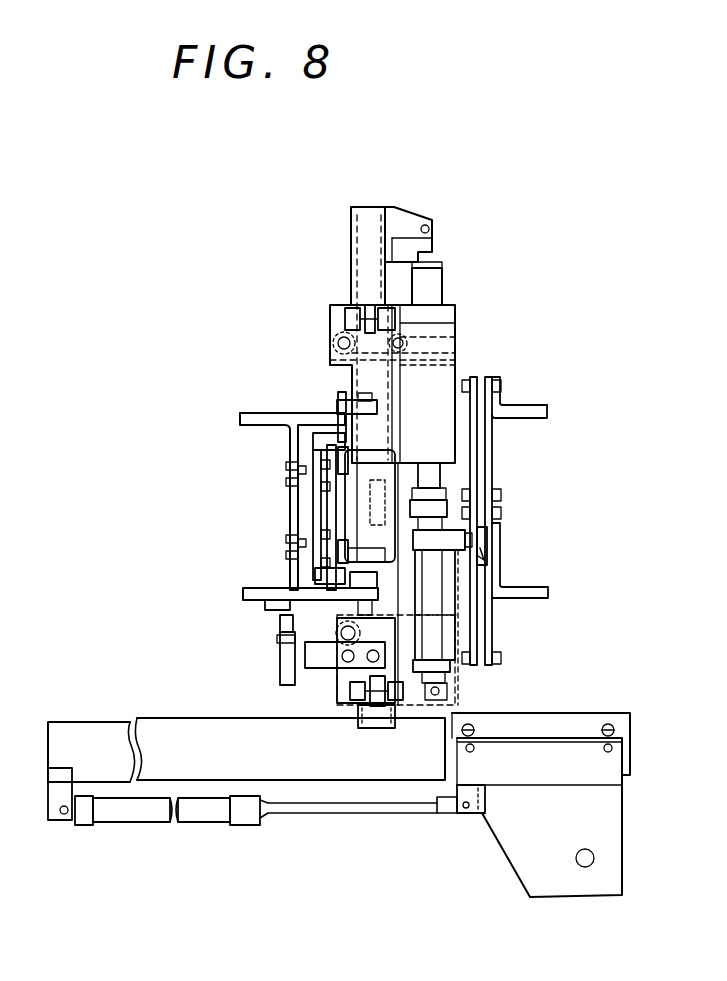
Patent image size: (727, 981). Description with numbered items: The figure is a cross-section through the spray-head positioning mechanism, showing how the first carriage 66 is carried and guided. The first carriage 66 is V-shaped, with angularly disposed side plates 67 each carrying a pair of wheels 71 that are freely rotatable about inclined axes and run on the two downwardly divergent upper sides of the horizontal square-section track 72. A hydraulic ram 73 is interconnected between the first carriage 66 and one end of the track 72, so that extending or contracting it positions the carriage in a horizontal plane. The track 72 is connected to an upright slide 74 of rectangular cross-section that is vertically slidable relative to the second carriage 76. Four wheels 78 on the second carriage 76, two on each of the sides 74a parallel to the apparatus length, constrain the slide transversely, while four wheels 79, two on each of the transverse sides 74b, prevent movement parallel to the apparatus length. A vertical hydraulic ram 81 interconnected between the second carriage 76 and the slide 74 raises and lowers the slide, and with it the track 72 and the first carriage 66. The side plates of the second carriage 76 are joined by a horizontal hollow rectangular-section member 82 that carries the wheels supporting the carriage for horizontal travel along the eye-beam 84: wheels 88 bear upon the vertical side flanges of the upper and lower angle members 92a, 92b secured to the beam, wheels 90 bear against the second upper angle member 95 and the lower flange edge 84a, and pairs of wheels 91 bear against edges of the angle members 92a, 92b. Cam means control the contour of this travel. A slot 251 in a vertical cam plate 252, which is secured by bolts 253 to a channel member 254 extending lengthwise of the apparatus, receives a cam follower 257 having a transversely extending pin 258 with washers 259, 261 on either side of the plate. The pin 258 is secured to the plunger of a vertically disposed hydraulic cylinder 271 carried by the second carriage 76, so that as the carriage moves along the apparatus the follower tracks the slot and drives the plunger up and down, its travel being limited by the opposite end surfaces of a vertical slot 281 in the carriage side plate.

The upright slide 74 is at (352, 240).
The sides of the slide parallel to the length of the apparatus 74a is at (352, 218).
The sides of the slide transverse to the length of the apparatus 74b is at (366, 207).
The vertical hydraulic ram 81 is at (442, 285).
The wheels 79 is at (352, 310).
The wheels 78 is at (340, 338).
The second carriage 76 is at (345, 370).
The hydraulic cylinder 271 is at (440, 368).
The second upper angle member 95 is at (340, 398).
The wheels 90 is at (367, 398).
The upper angle member 92a is at (343, 447).
The lower angle member 92b is at (297, 588).
The eye-beam 84 is at (245, 413).
The lower flange edge 84a is at (290, 610).
The wheels 88 is at (313, 438).
The horizontal hollow rectangular-section member 82 is at (325, 505).
The wheels 91 is at (343, 458).
The pin 258 is at (424, 485).
The vertical slot 281 is at (400, 632).
The slot 251 is at (490, 540).
The bolts 253 is at (500, 386).
The channel member 254 is at (533, 405).
The vertical cam plate 252 is at (490, 428).
The washer 261 is at (500, 515).
The washer 259 is at (487, 530).
The cam follower 257 is at (484, 562).
The track 72 is at (82, 726).
The hydraulic ram 73 is at (188, 808).
The wheels 71 is at (470, 724).
The side plates 67 is at (518, 856).
The first carriage 66 is at (486, 833).